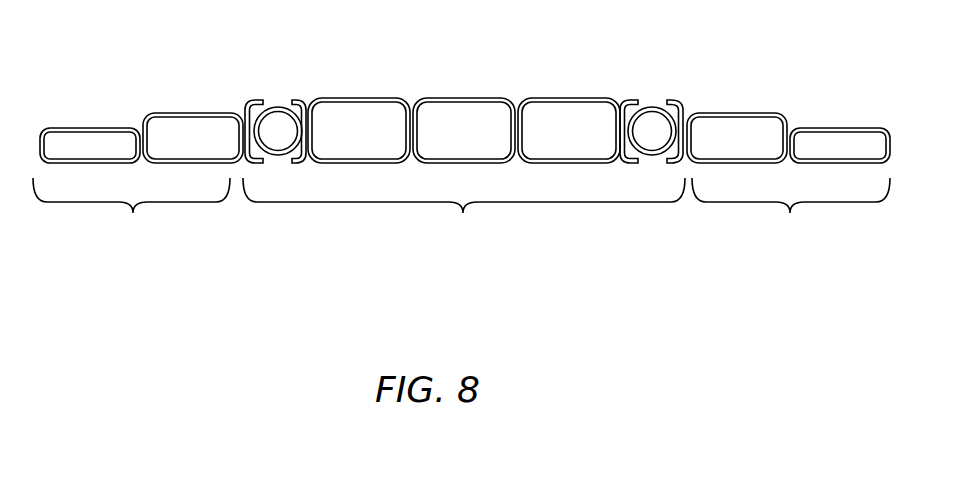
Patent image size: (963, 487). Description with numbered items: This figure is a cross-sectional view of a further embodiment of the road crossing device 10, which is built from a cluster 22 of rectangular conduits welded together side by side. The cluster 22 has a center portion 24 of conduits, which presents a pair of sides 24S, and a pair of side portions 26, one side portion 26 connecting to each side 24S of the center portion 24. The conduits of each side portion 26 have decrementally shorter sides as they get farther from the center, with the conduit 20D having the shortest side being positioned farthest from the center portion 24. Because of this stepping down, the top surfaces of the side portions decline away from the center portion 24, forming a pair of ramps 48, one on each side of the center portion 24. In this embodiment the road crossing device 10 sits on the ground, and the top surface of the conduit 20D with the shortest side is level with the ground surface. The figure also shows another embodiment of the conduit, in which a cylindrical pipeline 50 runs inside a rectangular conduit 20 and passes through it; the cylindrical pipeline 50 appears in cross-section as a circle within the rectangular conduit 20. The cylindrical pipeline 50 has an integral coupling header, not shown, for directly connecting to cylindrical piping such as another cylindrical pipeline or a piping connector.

The road crossing device 10 is at (350, 230).
The rectangular conduit 20 is at (138, 177).
The conduit with the shortest side 20D is at (100, 128).
The cluster of conduits 22 is at (393, 75).
The center portion 24 is at (460, 126).
The sides of the center portion 24S is at (253, 100).
The side portion 26 is at (788, 177).
The ramp 48 is at (147, 90).
The cylindrical pipeline 50 is at (280, 108).